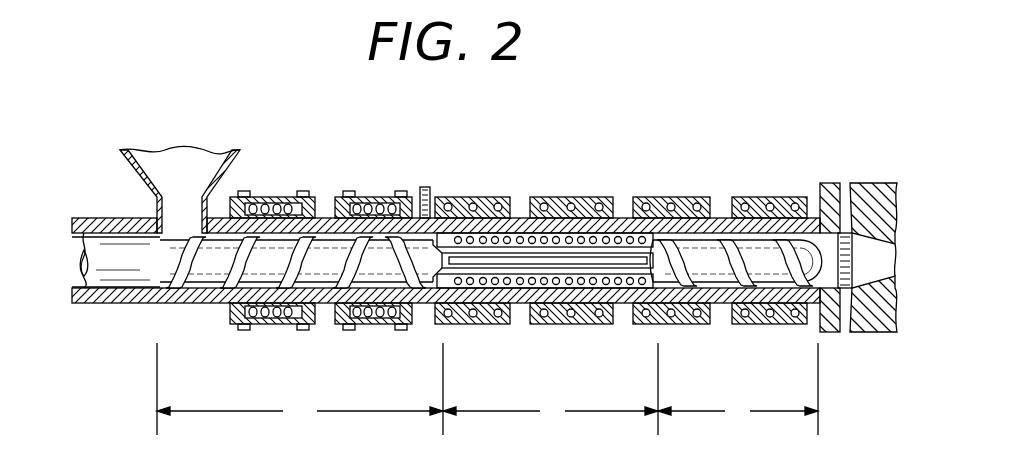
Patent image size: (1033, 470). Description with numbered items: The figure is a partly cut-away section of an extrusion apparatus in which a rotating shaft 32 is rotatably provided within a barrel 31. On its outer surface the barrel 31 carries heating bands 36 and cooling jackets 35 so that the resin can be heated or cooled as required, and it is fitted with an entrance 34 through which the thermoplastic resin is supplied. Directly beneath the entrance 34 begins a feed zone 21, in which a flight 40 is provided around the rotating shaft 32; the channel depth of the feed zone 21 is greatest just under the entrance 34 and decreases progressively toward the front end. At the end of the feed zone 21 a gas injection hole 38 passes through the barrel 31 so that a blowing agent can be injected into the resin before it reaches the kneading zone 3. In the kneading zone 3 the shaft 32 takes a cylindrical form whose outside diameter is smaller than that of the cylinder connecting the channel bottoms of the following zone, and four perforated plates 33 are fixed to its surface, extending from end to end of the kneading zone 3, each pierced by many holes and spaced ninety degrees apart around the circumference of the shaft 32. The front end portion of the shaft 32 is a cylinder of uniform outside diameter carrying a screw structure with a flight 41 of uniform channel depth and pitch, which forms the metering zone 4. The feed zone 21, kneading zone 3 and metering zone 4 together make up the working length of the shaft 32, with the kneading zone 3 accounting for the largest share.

The feed zone 21 is at (300, 389).
The kneading zone 3 is at (550, 389).
The metering zone 4 is at (738, 389).
The barrel 31 is at (322, 304).
The rotating shaft 32 is at (257, 247).
The perforated plates 33 is at (585, 262).
The entrance 34 is at (172, 158).
The cooling jackets 35 is at (483, 197).
The heating bands 36 is at (280, 195).
The gas injection hole 38 is at (425, 187).
The flight 40 is at (328, 242).
The flight 41 is at (755, 245).